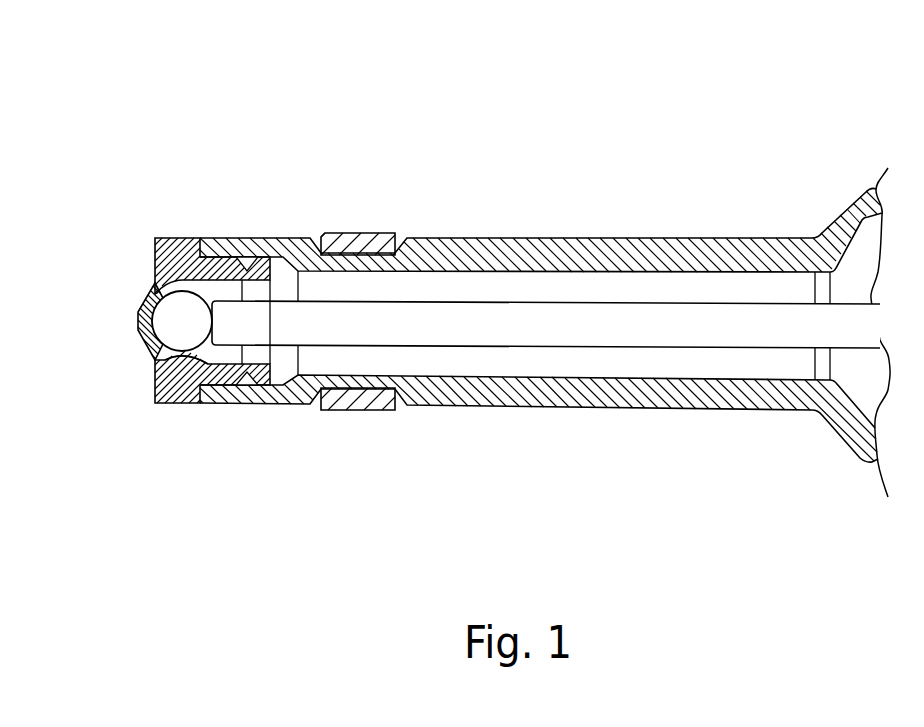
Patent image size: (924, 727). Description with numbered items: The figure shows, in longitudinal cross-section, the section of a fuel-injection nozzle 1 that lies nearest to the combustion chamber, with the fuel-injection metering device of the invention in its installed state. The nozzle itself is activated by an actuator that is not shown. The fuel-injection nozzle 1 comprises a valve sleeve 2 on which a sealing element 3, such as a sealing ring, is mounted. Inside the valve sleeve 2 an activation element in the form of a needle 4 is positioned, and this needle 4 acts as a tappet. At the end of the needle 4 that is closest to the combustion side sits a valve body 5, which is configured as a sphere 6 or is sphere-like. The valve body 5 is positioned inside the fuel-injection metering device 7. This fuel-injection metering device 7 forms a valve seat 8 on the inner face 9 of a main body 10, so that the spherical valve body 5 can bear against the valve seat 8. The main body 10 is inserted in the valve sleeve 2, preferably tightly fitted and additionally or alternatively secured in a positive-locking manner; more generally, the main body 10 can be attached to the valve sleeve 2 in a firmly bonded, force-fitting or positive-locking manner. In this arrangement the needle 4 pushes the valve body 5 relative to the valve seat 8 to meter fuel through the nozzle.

The fuel-injection nozzle 1 is at (216, 84).
The valve sleeve 2 is at (437, 238).
The sealing element 3 is at (352, 410).
The needle 4 is at (500, 325).
The valve body 5 is at (110, 384).
The sphere 6 is at (157, 362).
The fuel-injection metering device 7 is at (112, 215).
The valve seat 8 is at (160, 290).
The inner face 9 is at (200, 380).
The main body 10 is at (178, 250).